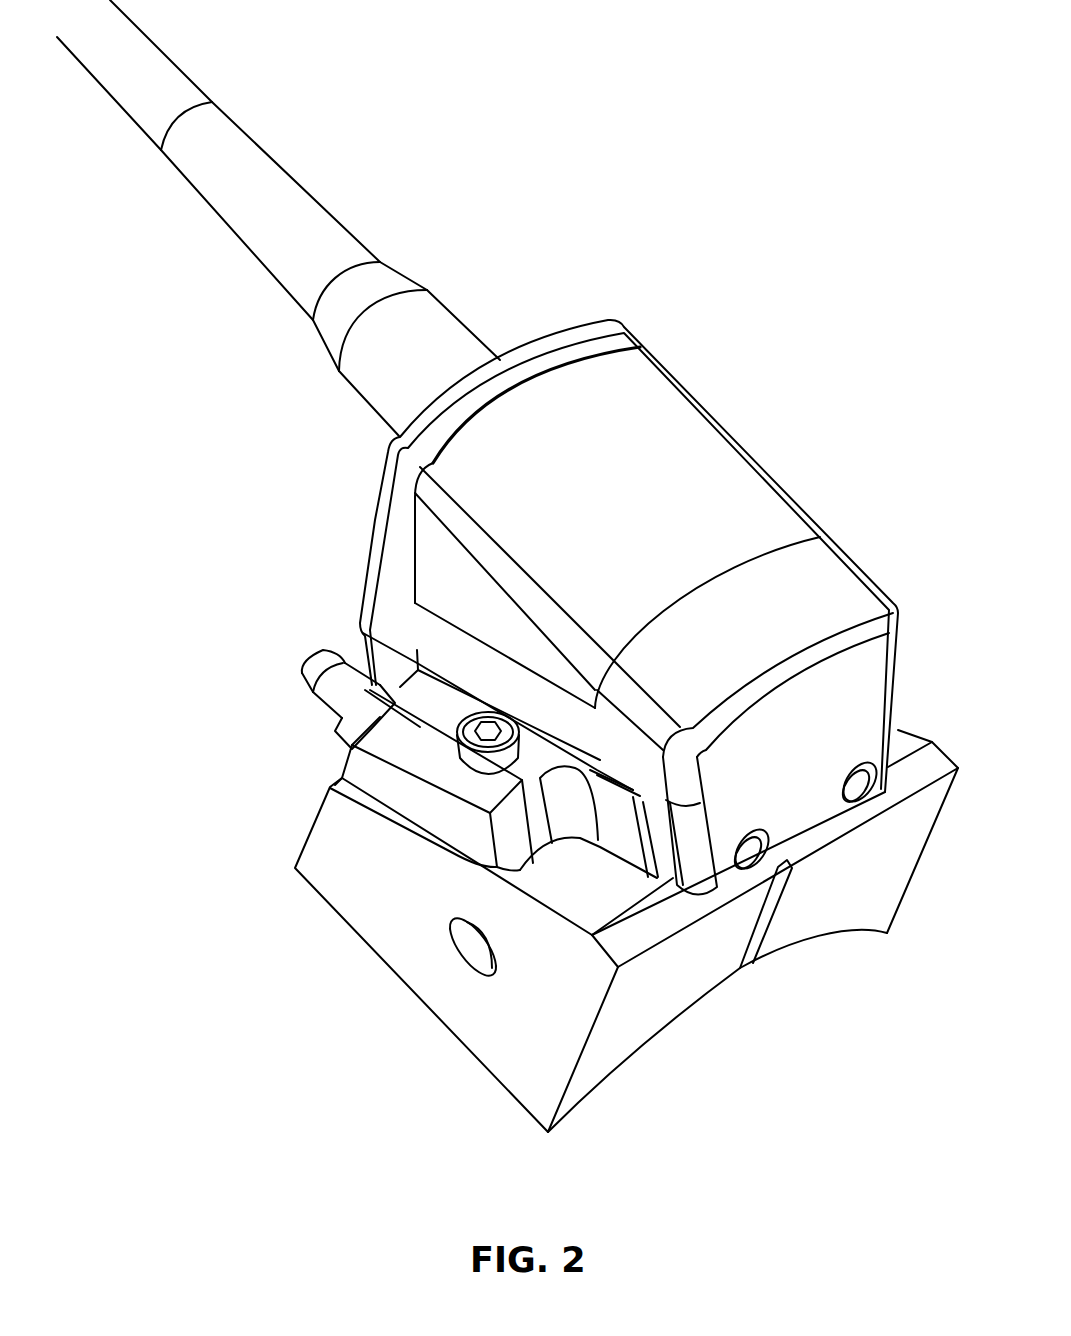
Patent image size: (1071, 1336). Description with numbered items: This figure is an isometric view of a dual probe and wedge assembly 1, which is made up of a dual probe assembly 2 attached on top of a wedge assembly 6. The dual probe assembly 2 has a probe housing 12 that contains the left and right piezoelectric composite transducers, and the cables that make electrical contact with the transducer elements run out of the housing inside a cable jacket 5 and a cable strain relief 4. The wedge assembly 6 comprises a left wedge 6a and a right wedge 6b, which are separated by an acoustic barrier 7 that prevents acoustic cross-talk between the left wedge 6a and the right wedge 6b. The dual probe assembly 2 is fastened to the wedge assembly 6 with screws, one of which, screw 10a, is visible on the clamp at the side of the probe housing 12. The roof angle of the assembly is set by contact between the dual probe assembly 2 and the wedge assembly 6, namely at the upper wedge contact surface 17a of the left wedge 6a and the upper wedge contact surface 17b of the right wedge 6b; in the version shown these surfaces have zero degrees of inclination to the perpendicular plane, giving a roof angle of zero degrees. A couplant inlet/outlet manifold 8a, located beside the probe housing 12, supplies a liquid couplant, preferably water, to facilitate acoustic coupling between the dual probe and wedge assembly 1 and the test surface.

The dual probe and wedge assembly 1 is at (560, 153).
The dual probe assembly 2 is at (308, 456).
The cable strain relief 4 is at (265, 230).
The cable jacket 5 is at (123, 63).
The wedge assembly 6 is at (802, 1026).
The left wedge 6a is at (668, 990).
The right wedge 6b is at (795, 915).
The acoustic barrier 7 is at (758, 940).
The couplant inlet/outlet manifold 8a is at (340, 690).
The screw 10a is at (473, 757).
The probe housing 12 is at (717, 452).
The upper wedge contact surface 17a is at (575, 887).
The upper wedge contact surface 17b is at (911, 740).